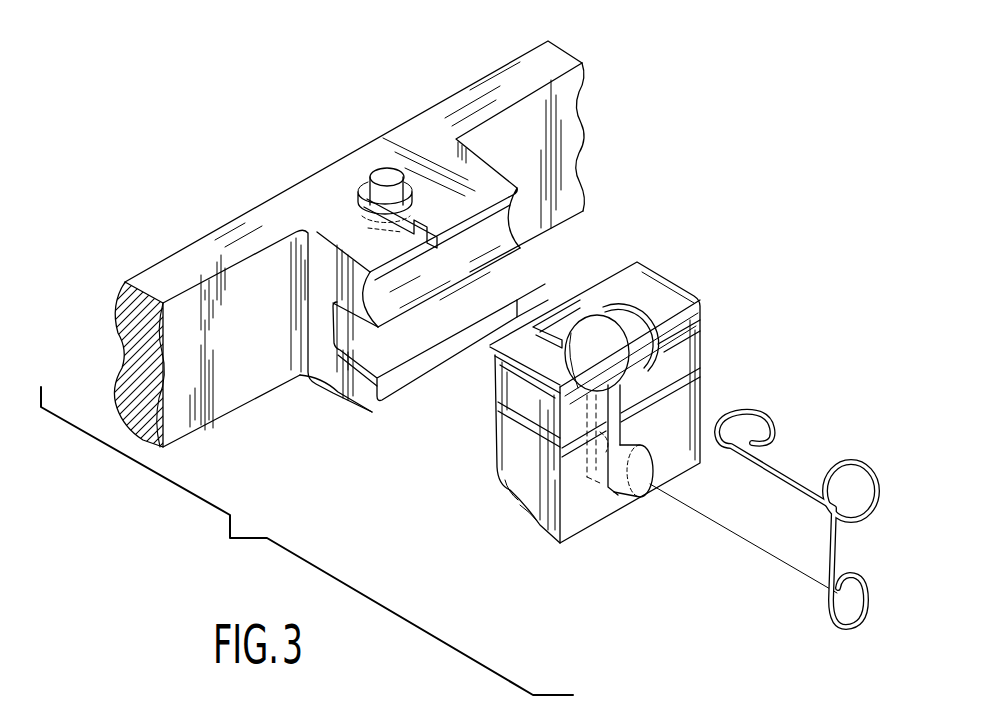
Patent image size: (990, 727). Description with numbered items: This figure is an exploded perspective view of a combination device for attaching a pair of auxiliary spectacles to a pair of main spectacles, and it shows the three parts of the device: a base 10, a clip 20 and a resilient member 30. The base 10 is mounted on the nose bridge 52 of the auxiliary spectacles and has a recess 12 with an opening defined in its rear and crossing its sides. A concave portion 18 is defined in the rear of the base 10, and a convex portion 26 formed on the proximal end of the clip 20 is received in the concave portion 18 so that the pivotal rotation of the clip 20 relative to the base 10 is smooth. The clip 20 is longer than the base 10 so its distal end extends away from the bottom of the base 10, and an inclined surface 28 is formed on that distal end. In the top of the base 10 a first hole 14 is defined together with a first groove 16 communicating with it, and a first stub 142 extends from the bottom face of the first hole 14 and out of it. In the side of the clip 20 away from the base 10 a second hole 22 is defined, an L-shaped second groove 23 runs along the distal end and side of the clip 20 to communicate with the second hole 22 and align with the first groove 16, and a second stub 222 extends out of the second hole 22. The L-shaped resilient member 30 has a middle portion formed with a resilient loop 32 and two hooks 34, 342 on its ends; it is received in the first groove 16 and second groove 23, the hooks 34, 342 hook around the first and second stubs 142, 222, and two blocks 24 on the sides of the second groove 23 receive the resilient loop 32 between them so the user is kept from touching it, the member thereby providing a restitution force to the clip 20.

The base 10 is at (311, 237).
The nose bridge 52 is at (210, 287).
The recess 12 is at (363, 352).
The first hole 14 is at (368, 184).
The first stub 142 is at (382, 168).
The first groove 16 is at (414, 223).
The concave portion 18 is at (503, 237).
The clip 20 is at (700, 357).
The second hole 22 is at (615, 492).
The second stub 222 is at (642, 482).
The second groove 23 is at (577, 322).
The blocks 24 is at (650, 328).
The convex portion 26 is at (492, 382).
The inclined surface 28 is at (515, 495).
The resilient member 30 is at (846, 504).
The resilient loop 32 is at (872, 507).
The hook 34 is at (768, 422).
The hook 342 is at (863, 590).